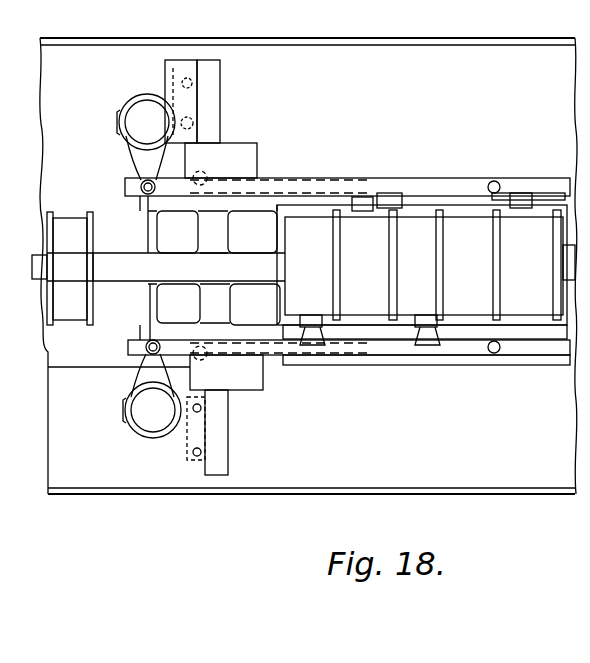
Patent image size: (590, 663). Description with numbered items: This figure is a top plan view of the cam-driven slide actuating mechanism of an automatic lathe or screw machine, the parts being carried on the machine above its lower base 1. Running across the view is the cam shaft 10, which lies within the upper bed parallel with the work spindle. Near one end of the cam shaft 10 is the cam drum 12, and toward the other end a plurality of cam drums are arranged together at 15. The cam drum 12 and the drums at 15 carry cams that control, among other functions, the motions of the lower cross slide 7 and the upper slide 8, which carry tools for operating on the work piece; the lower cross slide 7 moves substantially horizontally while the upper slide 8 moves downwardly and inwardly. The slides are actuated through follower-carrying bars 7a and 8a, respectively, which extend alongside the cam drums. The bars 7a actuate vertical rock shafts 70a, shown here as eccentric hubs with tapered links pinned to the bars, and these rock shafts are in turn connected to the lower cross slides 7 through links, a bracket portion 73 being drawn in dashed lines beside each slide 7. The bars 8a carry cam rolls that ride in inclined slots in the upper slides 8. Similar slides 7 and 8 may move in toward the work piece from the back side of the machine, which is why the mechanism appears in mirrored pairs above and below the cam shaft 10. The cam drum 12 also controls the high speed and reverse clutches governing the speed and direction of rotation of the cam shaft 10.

The lower base 1 is at (52, 445).
The lower cross slide 7 is at (212, 84).
The follower-carrying bar 7a is at (470, 182).
The upper cross slide 8 is at (238, 141).
The follower-carrying bar 8a is at (297, 186).
The cam shaft 10 is at (120, 258).
The cam drum 12 is at (66, 218).
The cam drums 15 is at (418, 218).
The vertical rock shaft 70a is at (142, 113).
The bracket 73 is at (200, 100).